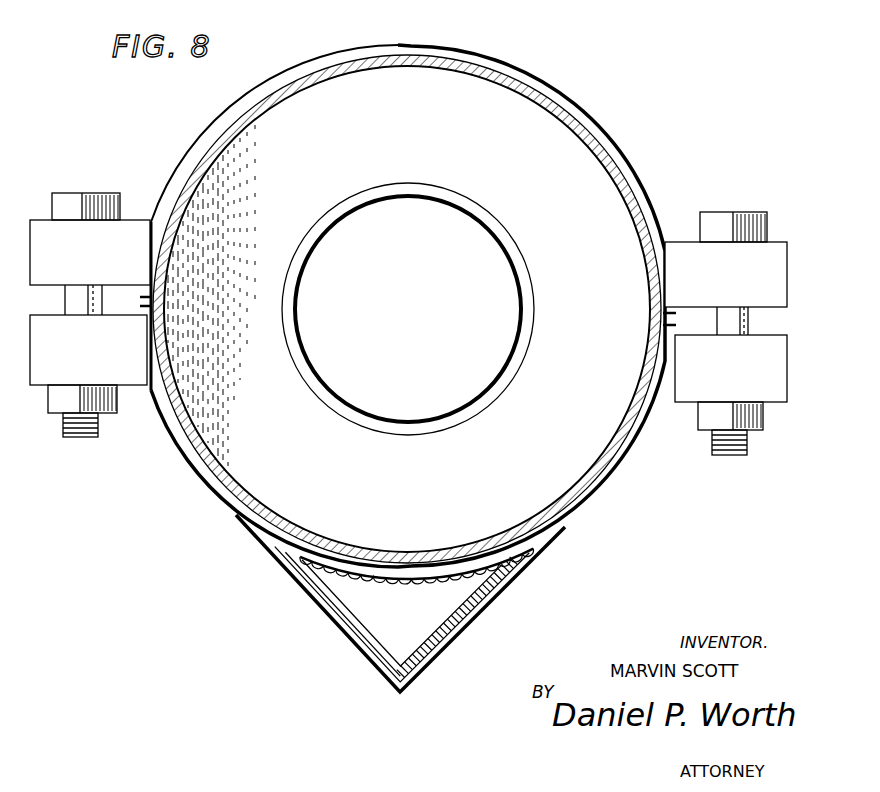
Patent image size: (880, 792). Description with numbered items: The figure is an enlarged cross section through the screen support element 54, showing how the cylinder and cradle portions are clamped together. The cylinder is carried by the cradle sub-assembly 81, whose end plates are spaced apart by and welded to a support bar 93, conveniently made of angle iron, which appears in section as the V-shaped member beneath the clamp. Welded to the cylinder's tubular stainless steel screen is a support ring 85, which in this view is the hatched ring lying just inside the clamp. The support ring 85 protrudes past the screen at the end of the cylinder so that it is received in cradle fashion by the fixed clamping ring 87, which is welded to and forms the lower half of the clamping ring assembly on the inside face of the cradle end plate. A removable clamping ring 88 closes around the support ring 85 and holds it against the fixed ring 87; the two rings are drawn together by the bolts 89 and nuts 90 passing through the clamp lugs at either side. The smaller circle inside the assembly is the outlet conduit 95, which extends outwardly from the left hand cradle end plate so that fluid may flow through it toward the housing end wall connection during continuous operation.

The screen support element 54 is at (209, 538).
The cradle sub-assembly 81 is at (279, 565).
The support ring 85 is at (528, 100).
The fixed clamping ring 87 is at (204, 483).
The removable clamping ring 88 is at (408, 306).
The bolt 89 is at (60, 193).
The nut 90 is at (50, 413).
The support bar 93 is at (343, 622).
The outlet conduit 95 is at (367, 207).